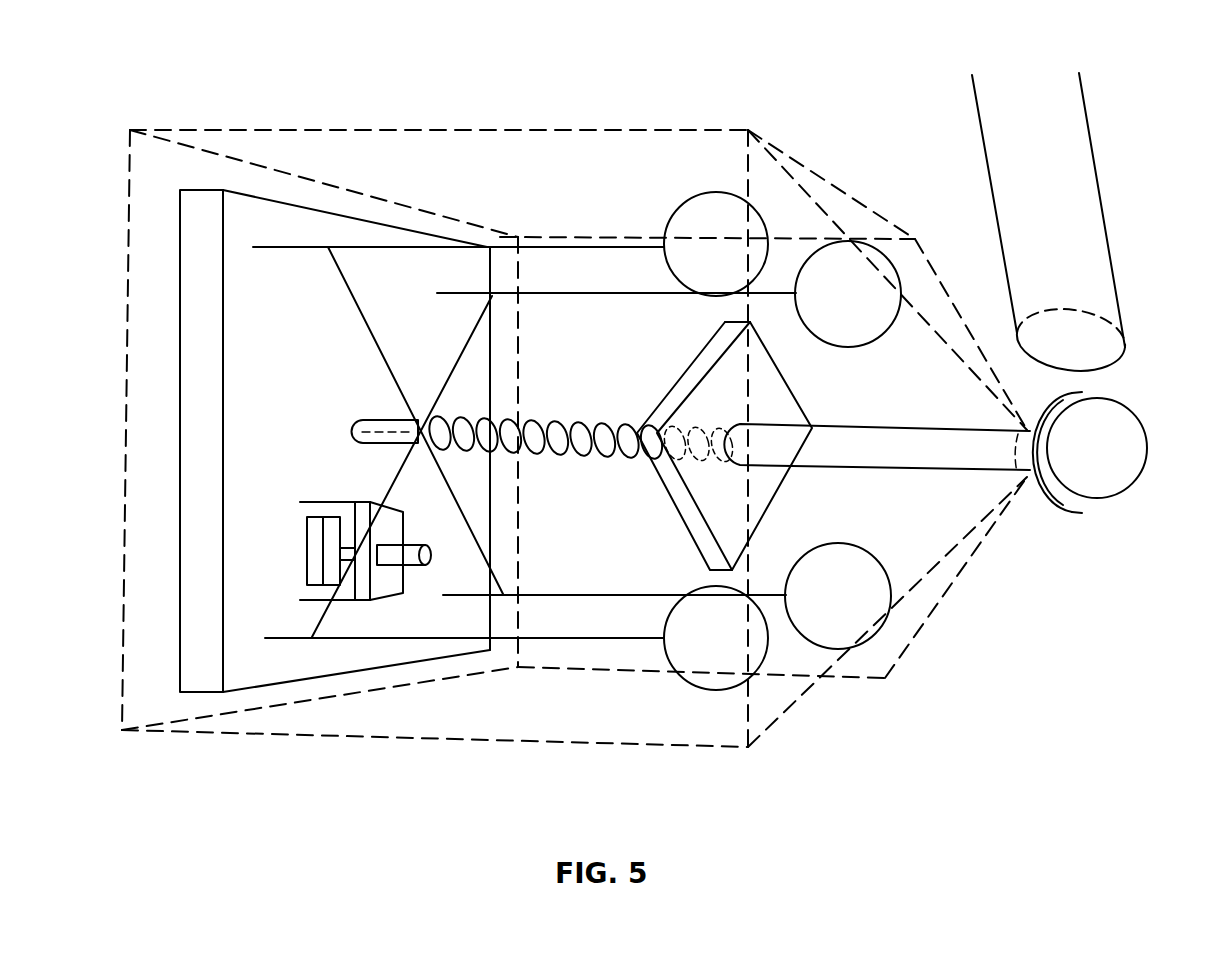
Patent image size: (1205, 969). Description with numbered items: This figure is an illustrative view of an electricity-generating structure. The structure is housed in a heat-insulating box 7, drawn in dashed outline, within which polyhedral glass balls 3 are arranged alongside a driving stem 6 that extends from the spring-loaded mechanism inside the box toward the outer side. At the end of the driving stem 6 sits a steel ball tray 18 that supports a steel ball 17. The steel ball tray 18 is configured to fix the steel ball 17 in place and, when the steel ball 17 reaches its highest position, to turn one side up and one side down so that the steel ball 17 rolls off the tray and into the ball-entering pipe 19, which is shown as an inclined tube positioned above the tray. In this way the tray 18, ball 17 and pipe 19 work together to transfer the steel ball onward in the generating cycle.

The polyhedral glass balls 3 is at (845, 612).
The driving stem 6 is at (912, 448).
The heat-insulating box 7 is at (622, 720).
The steel ball 17 is at (1103, 465).
The steel ball tray 18 is at (1043, 475).
The ball-entering pipe 19 is at (1067, 253).